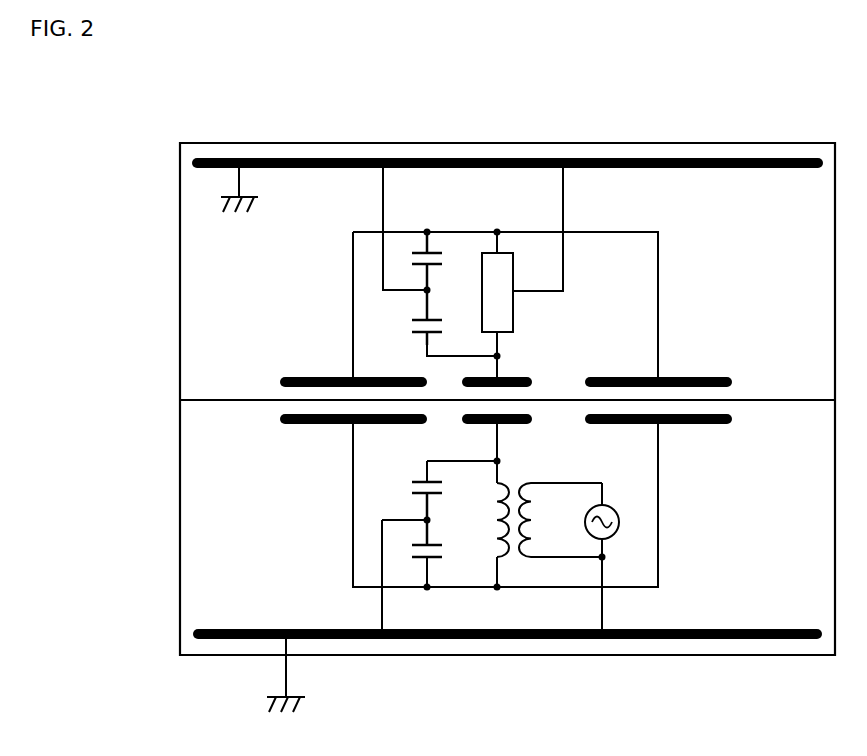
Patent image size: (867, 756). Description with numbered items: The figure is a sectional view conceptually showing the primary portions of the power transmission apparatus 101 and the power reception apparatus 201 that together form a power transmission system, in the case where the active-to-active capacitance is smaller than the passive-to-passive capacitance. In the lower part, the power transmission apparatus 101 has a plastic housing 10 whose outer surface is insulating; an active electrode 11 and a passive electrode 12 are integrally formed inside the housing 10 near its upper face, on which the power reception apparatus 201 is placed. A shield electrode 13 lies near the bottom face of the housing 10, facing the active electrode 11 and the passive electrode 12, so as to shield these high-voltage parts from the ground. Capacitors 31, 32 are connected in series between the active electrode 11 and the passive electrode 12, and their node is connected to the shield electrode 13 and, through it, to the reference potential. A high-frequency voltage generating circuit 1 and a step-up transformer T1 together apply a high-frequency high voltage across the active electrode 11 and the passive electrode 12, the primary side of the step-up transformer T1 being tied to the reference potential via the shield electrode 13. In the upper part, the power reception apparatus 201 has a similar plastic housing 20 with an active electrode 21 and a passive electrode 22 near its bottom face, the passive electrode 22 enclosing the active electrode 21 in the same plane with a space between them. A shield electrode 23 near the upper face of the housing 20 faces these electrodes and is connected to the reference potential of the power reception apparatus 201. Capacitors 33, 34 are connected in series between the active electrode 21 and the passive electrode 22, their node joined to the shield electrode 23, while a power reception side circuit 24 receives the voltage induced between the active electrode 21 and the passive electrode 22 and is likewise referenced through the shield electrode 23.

The high-frequency voltage generating circuit 1 is at (612, 507).
The housing 10 is at (180, 657).
The active electrode 11 is at (525, 425).
The passive electrode 12 is at (285, 425).
The shield electrode 13 is at (782, 640).
The housing 20 is at (190, 143).
The active electrode 21 is at (533, 376).
The passive electrode 22 is at (289, 375).
The shield electrode 23 is at (745, 156).
The power reception side circuit 24 is at (514, 307).
The capacitor 31 is at (437, 501).
The capacitor 32 is at (437, 538).
The capacitor 33 is at (419, 321).
The capacitor 34 is at (435, 261).
The power transmission apparatus 101 is at (161, 479).
The power reception apparatus 201 is at (162, 256).
The step-up transformer T1 is at (549, 511).